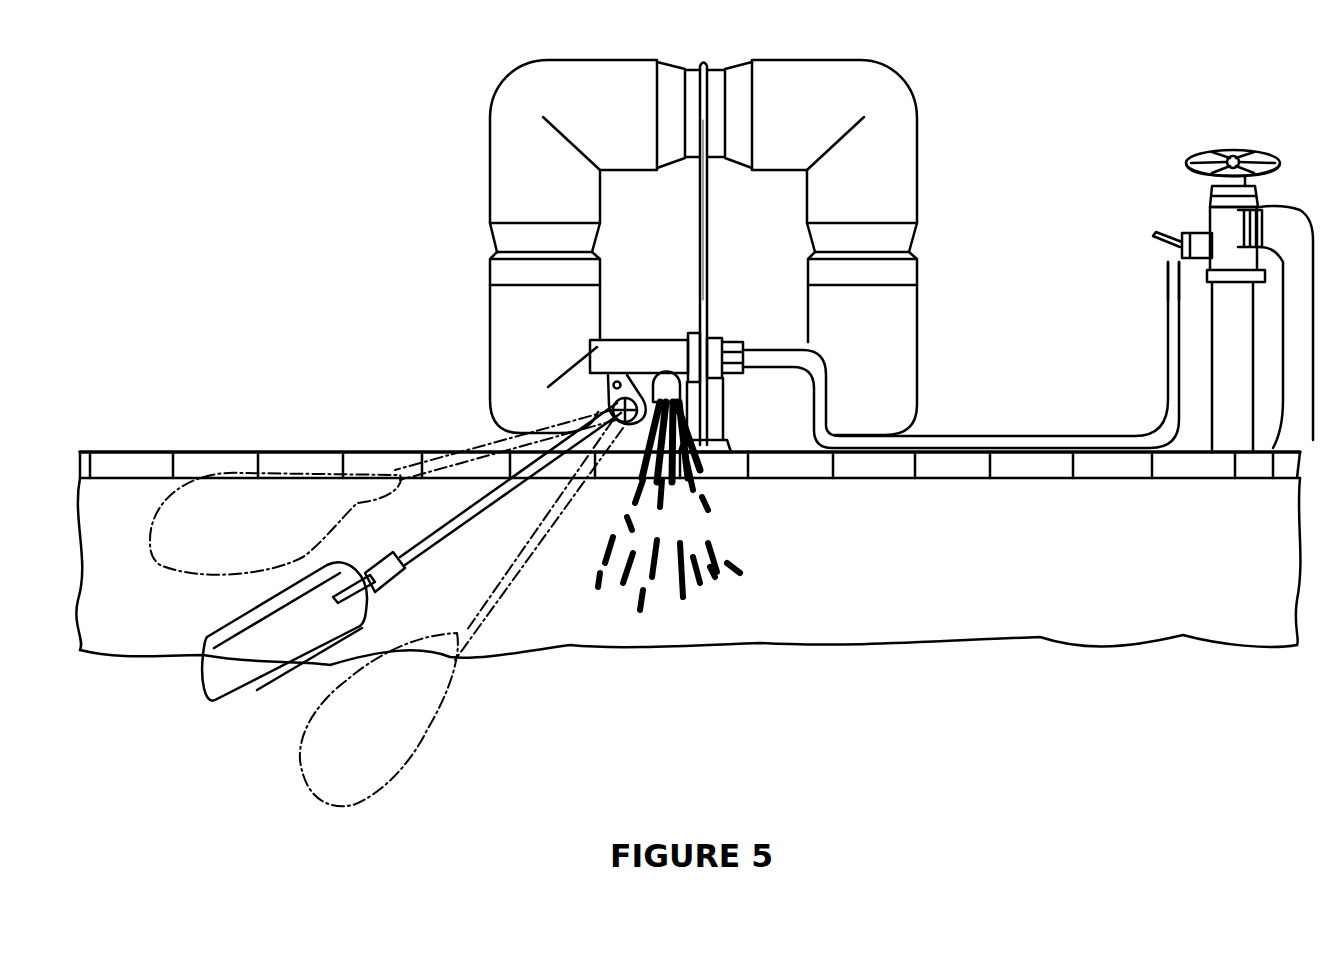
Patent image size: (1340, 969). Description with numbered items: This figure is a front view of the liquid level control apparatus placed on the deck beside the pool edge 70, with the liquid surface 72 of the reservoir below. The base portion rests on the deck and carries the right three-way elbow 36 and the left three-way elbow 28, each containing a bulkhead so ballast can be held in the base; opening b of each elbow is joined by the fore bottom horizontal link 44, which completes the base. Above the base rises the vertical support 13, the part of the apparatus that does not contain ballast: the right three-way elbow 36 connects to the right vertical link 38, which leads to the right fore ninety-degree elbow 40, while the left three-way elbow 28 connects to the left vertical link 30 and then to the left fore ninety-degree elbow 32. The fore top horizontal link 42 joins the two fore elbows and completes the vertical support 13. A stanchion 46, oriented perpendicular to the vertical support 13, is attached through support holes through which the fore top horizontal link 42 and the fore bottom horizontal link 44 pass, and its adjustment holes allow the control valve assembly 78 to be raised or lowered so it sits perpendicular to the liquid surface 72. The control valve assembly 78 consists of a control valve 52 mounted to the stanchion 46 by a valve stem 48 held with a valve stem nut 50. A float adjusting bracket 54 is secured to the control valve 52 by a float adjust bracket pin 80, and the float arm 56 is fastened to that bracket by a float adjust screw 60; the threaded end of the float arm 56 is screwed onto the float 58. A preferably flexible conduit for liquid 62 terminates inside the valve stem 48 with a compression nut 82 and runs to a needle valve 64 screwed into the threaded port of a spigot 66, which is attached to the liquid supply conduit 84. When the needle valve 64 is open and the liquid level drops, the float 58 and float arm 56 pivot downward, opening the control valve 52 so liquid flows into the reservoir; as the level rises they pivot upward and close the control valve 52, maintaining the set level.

The vertical support 13 is at (950, 387).
The left 3-way elbow 28 is at (915, 337).
The left vertical link 30 is at (910, 253).
The left fore 90 degree elbow 32 is at (917, 113).
The right 3-way elbow 36 is at (490, 313).
The right vertical link 38 is at (492, 252).
The right fore 90 degree elbow 40 is at (565, 60).
The fore top horizontal link 42 is at (713, 68).
The fore bottom horizontal link 44 is at (717, 427).
The stanchion 46 is at (707, 247).
The valve stem 48 is at (713, 340).
The valve stem nut 50 is at (708, 333).
The control valve 52 is at (612, 338).
The float adjusting bracket 54 is at (608, 398).
The float arm 56 is at (433, 547).
The float 58 is at (258, 700).
The float adjust screw 60 is at (613, 414).
The conduit for liquid 62 is at (1128, 436).
The needle valve 64 is at (1192, 233).
The spigot 66 is at (1218, 150).
The pool edge 70 is at (110, 452).
The liquid surface 72 is at (1183, 635).
The control valve assembly 78 is at (588, 516).
The float adjust bracket pin 80 is at (612, 386).
The compression nut 82 is at (1177, 270).
The liquid supply conduit 84 is at (1273, 473).